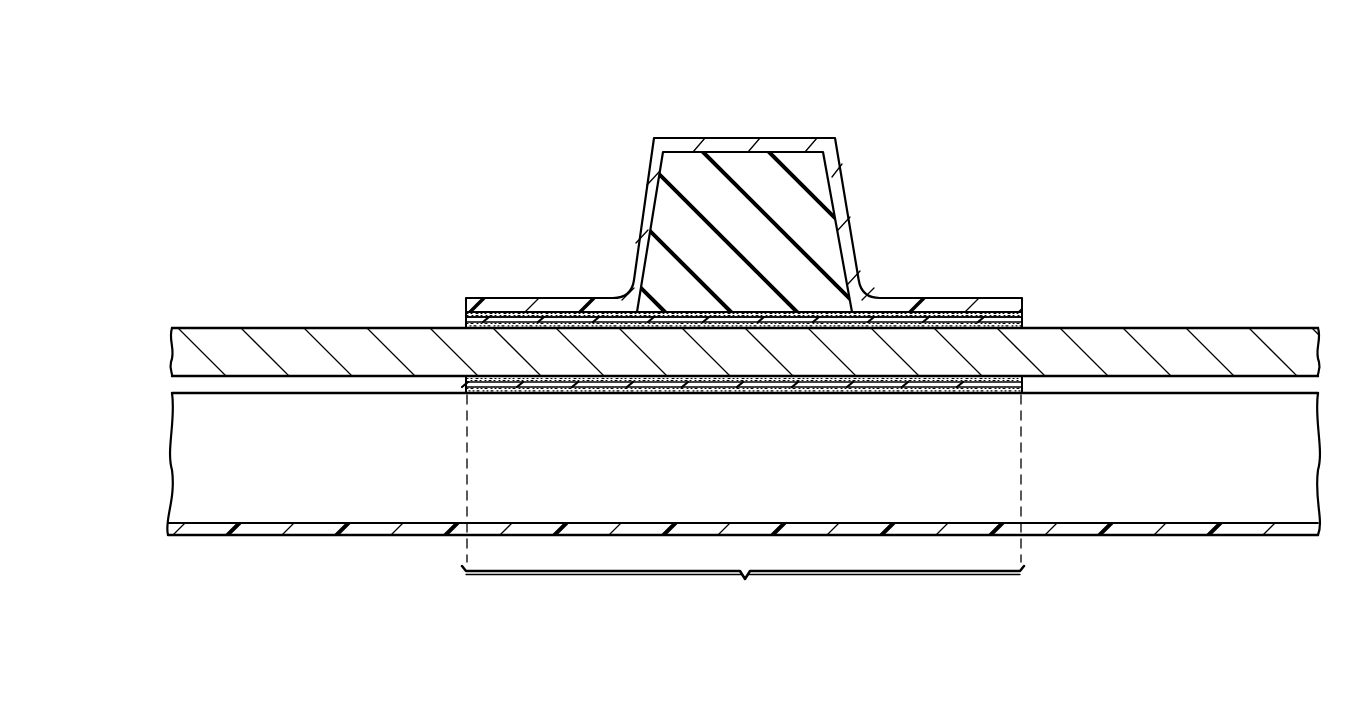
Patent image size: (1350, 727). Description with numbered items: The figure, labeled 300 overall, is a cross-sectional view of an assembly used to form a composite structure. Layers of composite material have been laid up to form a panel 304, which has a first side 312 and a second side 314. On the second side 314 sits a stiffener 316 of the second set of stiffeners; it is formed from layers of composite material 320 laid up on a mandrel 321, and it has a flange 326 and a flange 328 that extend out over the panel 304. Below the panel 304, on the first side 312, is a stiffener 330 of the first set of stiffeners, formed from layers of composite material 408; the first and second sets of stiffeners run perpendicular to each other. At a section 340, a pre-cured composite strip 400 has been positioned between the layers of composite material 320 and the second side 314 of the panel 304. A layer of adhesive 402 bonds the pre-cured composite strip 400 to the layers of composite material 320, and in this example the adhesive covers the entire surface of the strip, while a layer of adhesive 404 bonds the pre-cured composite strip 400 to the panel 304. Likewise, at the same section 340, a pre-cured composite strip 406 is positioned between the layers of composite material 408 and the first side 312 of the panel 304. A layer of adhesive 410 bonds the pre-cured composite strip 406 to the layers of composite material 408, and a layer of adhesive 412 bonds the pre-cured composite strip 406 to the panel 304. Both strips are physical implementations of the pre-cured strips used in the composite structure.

The semiconductor package assembly 300 is at (1036, 78).
The panel 304 is at (160, 348).
The first side 312 is at (300, 378).
The second side 314 is at (282, 327).
The stiffener 316 is at (810, 132).
The layers of composite material 320 is at (842, 193).
The mandrel 321 is at (735, 162).
The flange 326 is at (521, 296).
The flange 328 is at (958, 298).
The stiffener 330 is at (168, 475).
The section 340 is at (743, 508).
The pre-cured composite strip 400 is at (572, 312).
The layer of adhesive 402 is at (900, 318).
The layer of adhesive 404 is at (1005, 323).
The pre-cured composite strip 406 is at (768, 385).
The layers of composite material 408 is at (1183, 528).
The layer of adhesive 410 is at (655, 392).
The layer of adhesive 412 is at (878, 380).